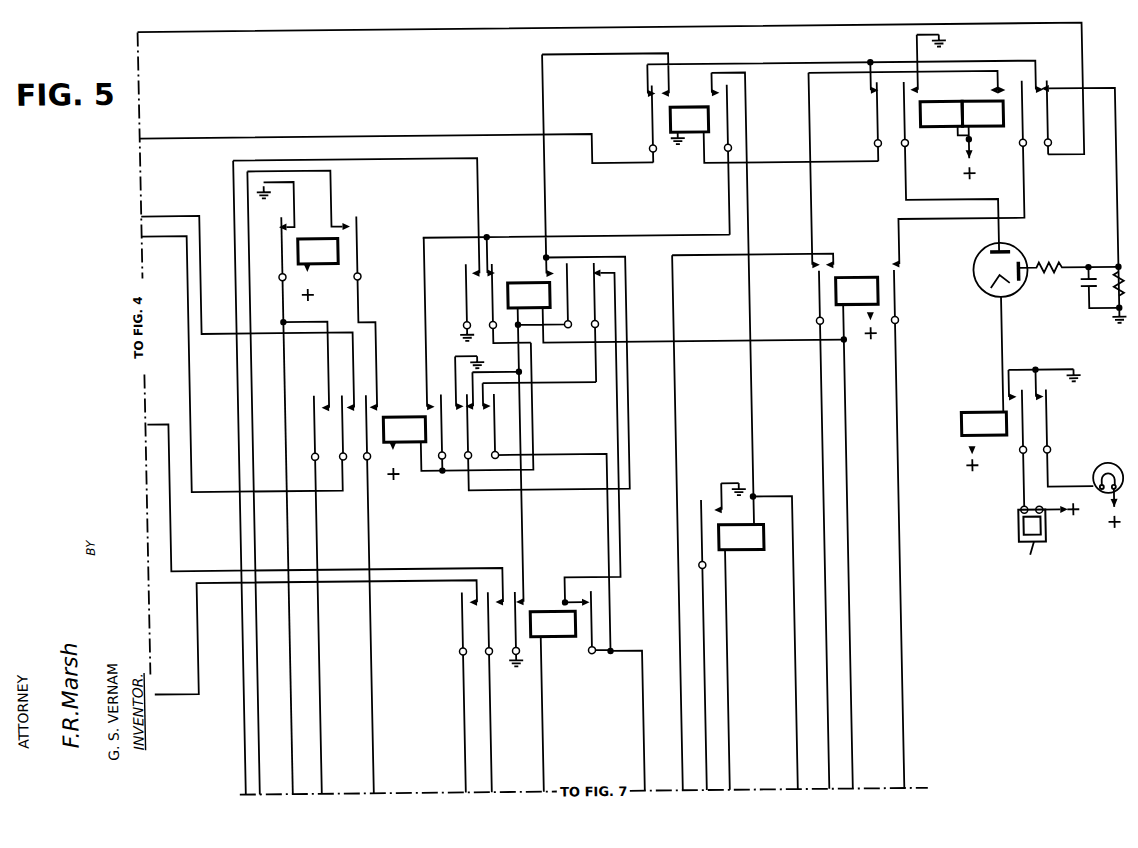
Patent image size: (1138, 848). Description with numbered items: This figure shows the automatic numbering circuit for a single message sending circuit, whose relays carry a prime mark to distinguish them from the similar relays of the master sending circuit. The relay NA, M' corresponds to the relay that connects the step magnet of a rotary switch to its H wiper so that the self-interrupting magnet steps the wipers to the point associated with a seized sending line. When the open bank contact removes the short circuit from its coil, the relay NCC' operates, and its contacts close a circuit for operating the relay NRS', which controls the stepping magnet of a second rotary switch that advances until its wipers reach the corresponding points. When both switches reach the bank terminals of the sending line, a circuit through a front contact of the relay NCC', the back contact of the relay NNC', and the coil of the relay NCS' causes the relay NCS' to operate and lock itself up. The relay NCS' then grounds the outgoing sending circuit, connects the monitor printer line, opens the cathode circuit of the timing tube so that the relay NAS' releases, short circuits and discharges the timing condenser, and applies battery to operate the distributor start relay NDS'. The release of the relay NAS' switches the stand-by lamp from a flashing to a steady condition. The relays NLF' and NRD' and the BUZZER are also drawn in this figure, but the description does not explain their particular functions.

The relay NLF' is at (318, 251).
The relay NCC' is at (689, 119).
The relay NAM NA is at (941, 113).
The relay NAM M' is at (983, 113).
The relay NNC' is at (529, 294).
The relay NCS' is at (404, 429).
The relay NRD' is at (857, 290).
The relay NAS' is at (983, 423).
The relay NRS' is at (742, 536).
The distributor start relay NDS' is at (553, 623).
The buzzer BUZZER is at (1029, 541).